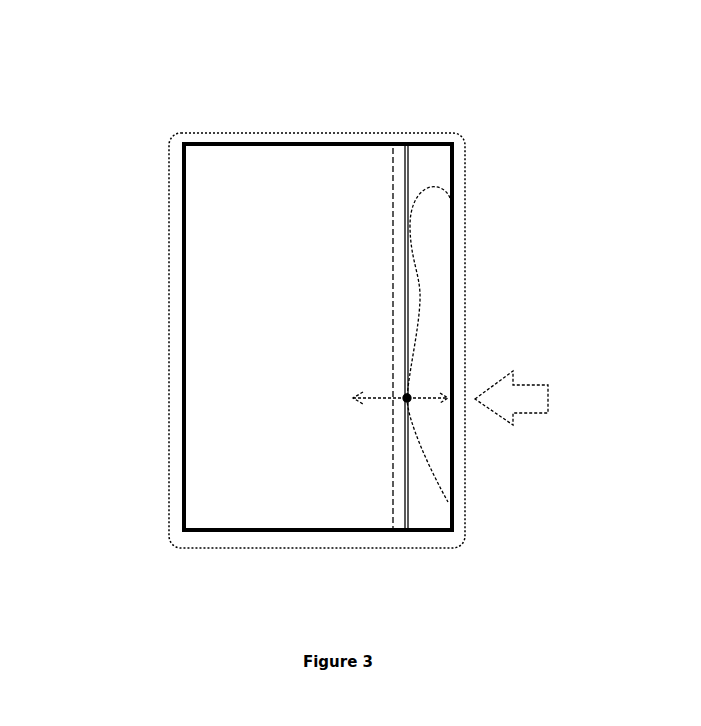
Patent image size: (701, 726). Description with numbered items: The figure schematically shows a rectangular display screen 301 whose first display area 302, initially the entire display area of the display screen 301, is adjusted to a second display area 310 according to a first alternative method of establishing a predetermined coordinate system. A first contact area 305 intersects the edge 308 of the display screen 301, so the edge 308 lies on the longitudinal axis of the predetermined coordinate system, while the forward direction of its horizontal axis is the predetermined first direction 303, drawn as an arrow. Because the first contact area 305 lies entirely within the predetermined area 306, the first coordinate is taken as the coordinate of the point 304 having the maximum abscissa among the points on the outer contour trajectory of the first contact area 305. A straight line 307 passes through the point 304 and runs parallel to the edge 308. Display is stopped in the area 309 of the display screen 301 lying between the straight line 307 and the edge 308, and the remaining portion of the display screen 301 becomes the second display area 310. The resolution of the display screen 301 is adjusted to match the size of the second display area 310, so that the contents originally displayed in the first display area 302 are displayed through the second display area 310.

The display screen 301 is at (536, 398).
The first display area 302 is at (322, 170).
The predetermined first direction 303 is at (383, 402).
The point indicated by the first coordinate 304 is at (410, 401).
The first contact area 305 is at (422, 193).
The predetermined area 306 is at (402, 516).
The straight line 307 is at (410, 339).
The edge 308 is at (452, 300).
The area between the straight line and the edge 309 is at (422, 172).
The second display area 310 is at (400, 315).